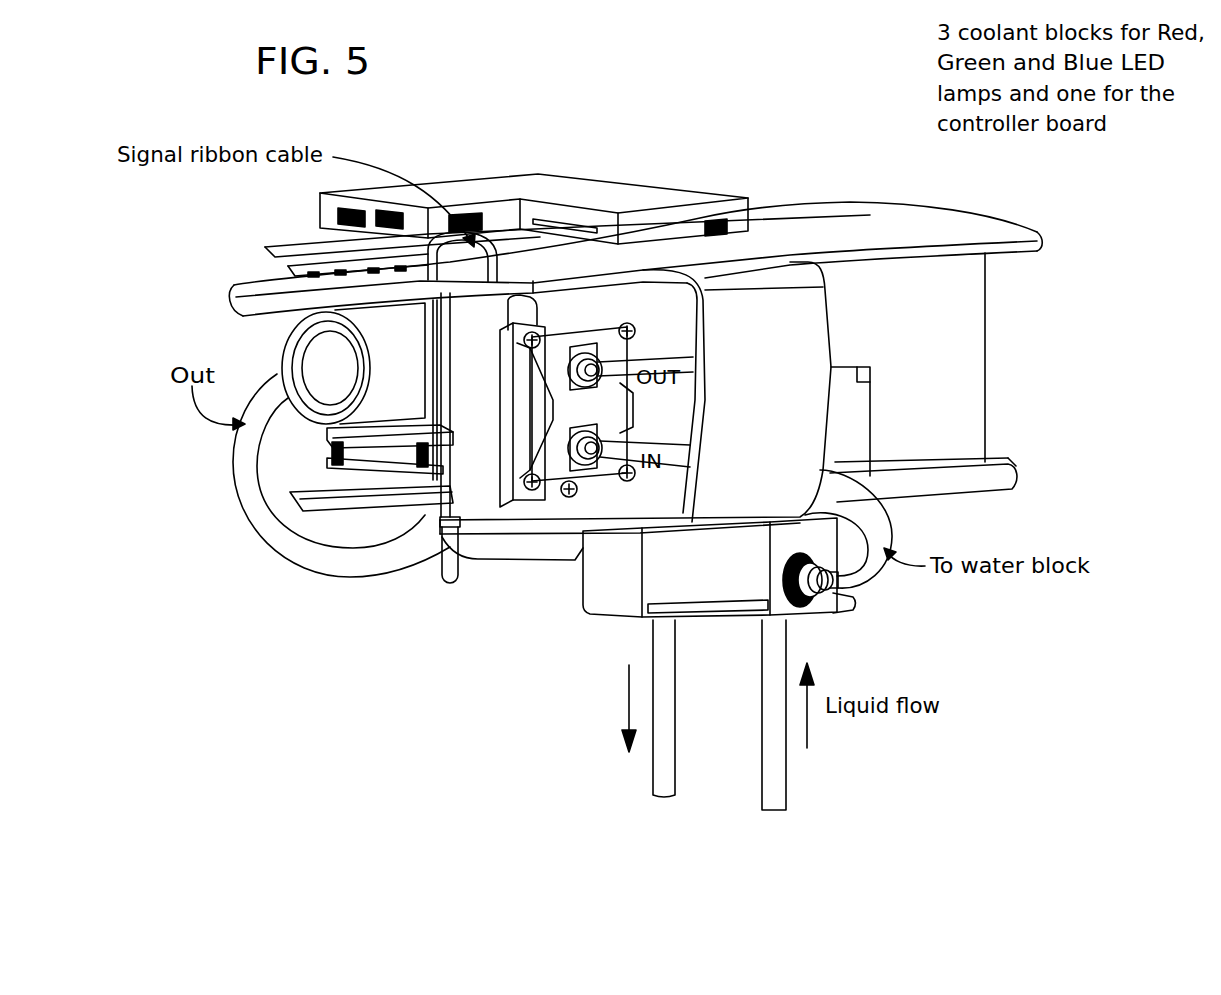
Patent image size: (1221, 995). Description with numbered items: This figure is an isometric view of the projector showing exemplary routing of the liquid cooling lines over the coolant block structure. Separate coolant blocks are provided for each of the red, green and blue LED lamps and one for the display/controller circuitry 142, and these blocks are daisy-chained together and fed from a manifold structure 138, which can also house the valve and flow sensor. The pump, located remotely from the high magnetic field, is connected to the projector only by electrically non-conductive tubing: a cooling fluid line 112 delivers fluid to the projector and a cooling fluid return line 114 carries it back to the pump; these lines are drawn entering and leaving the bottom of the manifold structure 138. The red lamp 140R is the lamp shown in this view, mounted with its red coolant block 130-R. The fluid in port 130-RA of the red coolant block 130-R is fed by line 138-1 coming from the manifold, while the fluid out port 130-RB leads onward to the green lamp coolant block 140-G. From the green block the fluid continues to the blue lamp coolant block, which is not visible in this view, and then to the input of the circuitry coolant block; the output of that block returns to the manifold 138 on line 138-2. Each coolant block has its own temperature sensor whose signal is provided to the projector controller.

The display/controller circuitry 142 is at (437, 168).
The fluid out port 130-RB is at (587, 422).
The fluid in port 130-RA is at (613, 367).
The green lamp coolant block 140-G is at (327, 448).
The red lamp 140R is at (500, 445).
The red coolant block 130-R is at (553, 475).
The line 138-2 is at (482, 553).
The manifold structure 138 is at (598, 618).
The line 138-1 is at (885, 529).
The cooling fluid return line 114 is at (662, 777).
The cooling fluid line 112 is at (778, 784).